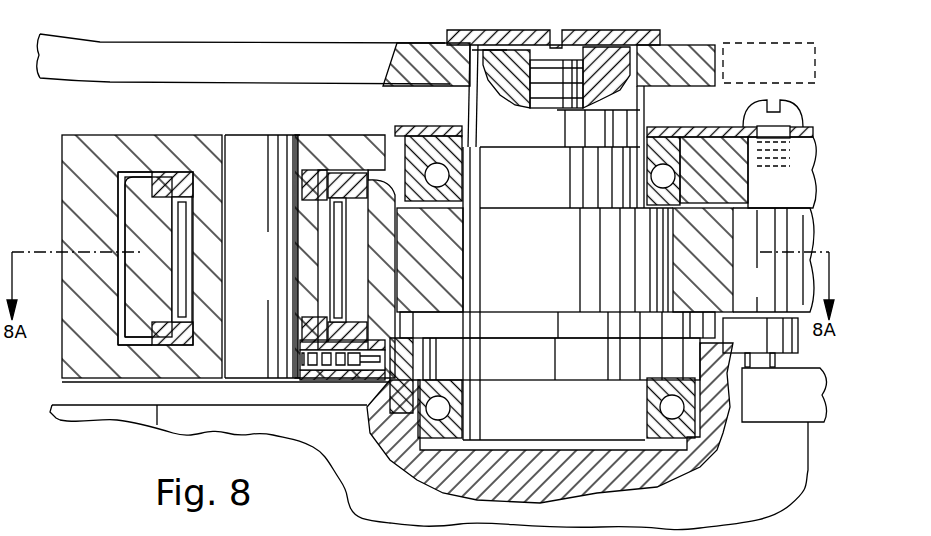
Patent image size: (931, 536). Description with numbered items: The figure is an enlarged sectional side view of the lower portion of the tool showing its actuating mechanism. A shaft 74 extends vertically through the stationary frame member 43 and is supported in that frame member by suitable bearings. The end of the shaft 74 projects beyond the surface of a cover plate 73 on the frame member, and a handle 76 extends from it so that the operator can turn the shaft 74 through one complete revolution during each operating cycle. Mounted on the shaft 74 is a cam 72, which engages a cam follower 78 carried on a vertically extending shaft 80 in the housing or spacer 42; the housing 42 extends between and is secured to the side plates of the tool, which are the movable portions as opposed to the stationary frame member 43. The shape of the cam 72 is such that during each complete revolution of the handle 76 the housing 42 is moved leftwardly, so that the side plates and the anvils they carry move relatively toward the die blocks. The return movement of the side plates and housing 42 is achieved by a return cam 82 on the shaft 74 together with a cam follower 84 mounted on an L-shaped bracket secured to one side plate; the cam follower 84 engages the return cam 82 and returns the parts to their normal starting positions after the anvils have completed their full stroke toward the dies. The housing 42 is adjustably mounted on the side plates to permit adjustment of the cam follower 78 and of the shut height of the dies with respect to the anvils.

The handle 76 is at (241, 74).
The cover plate 73 is at (682, 128).
The shaft 74 is at (537, 186).
The vertically extending shaft 80 is at (264, 290).
The cam follower 78 is at (381, 290).
The return cam 82 is at (520, 322).
The cam 72 is at (766, 293).
The cam follower 84 is at (762, 343).
The housing 42 is at (67, 278).
The stationary frame member 43 is at (383, 498).